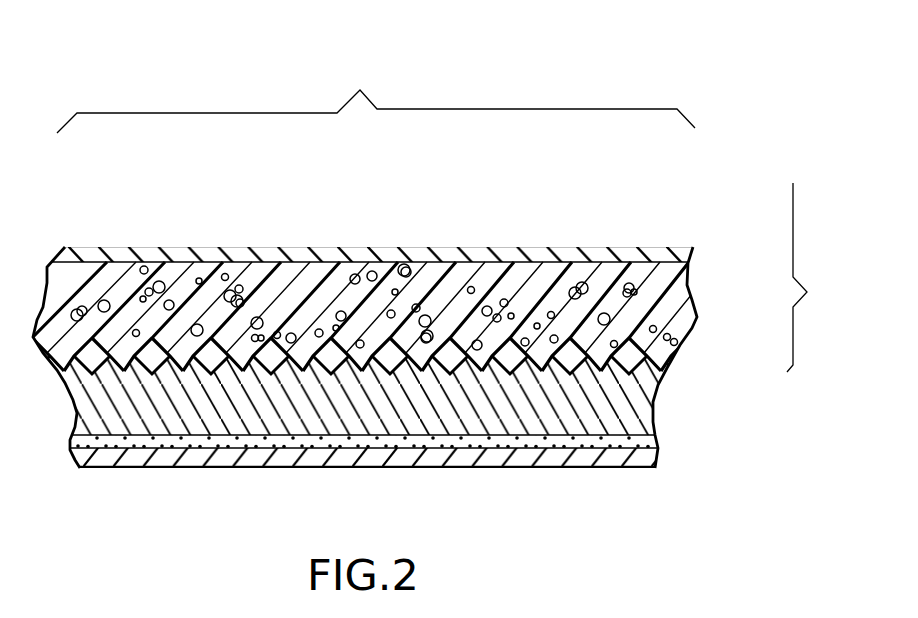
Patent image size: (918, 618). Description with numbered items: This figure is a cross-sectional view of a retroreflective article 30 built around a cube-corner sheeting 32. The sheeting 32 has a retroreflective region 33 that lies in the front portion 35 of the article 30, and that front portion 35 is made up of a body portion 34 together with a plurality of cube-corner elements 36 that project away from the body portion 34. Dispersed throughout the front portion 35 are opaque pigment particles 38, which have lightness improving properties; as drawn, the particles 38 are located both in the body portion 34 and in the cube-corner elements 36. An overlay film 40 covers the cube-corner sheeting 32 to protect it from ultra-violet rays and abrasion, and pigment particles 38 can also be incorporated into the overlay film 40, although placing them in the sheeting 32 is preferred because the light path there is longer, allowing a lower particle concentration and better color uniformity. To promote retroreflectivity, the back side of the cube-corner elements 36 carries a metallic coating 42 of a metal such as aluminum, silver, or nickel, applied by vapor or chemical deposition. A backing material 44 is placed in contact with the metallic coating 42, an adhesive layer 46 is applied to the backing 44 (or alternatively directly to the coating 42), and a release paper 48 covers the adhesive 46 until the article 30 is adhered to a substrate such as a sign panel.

The retroreflective article 30 is at (690, 68).
The cube-corner sheeting 32 is at (688, 311).
The retroreflective region 33 is at (376, 94).
The body portion 34 is at (665, 284).
The front portion 35 is at (819, 277).
The cube-corner elements 36 is at (572, 366).
The opaque pigment particles 38 is at (150, 280).
The overlay film 40 is at (459, 254).
The metallic coating 42 is at (287, 374).
The backing material 44 is at (640, 412).
The adhesive layer 46 is at (133, 443).
The release paper 48 is at (235, 455).